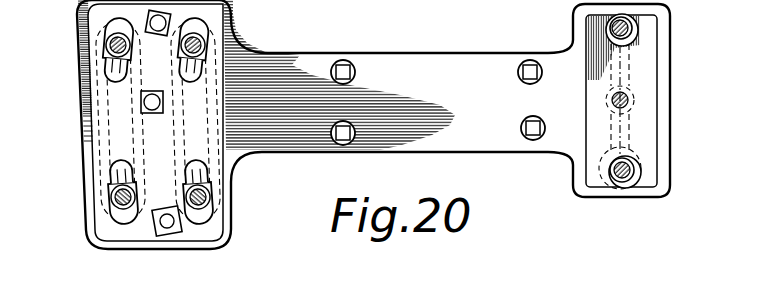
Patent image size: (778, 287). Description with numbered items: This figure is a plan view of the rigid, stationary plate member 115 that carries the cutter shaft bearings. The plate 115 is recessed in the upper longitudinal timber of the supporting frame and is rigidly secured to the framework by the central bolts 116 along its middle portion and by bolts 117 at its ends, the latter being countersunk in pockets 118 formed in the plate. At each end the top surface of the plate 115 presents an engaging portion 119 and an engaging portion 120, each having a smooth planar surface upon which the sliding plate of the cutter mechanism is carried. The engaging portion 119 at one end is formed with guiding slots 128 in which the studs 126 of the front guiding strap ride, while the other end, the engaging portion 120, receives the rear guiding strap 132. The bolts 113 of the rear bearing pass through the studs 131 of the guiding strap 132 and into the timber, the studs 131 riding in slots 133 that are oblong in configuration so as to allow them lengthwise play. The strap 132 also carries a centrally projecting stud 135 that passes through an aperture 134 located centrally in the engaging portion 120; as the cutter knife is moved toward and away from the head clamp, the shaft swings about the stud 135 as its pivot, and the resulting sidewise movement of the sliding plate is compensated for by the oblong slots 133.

The bolts 113 is at (625, 34).
The stationary plate member 115 is at (433, 133).
The central bolts 116 is at (350, 128).
The bolts 117 is at (170, 227).
The pockets 118 is at (165, 233).
The engaging portion 119 is at (100, 152).
The engaging portion 120 is at (643, 127).
The studs 126 is at (59, 111).
The guiding slots 128 is at (105, 70).
The studs 131 is at (631, 37).
The guiding strap 132 is at (627, 72).
The slots 133 is at (634, 175).
The aperture 134 is at (628, 103).
The centrally projecting stud 135 is at (630, 106).